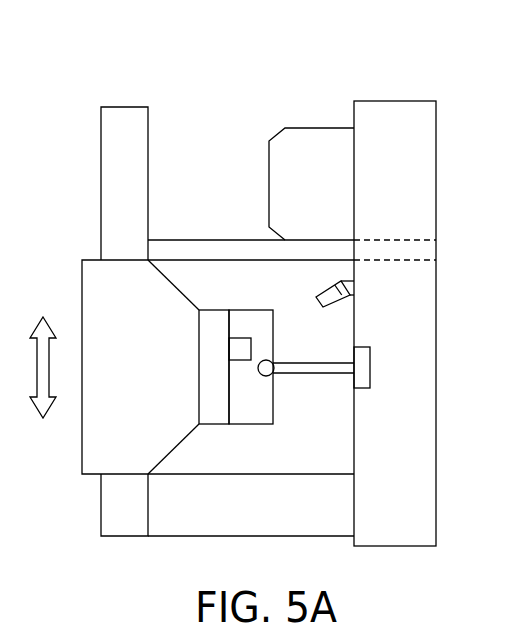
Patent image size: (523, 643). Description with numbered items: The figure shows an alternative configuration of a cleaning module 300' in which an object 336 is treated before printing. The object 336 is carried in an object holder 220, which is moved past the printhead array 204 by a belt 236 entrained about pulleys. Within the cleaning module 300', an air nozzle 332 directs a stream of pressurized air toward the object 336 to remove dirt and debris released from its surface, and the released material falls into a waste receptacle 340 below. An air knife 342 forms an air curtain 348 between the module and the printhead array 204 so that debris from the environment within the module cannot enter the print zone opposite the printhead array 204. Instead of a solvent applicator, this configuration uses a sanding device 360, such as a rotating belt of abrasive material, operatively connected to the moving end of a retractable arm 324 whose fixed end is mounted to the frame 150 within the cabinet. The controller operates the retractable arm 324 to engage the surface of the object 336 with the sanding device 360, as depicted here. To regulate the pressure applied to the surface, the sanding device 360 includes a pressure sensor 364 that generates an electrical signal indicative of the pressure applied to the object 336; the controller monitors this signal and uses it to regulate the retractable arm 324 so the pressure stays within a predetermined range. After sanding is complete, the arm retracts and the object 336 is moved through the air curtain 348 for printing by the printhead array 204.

The frame 150 is at (436, 165).
The printhead array 204 is at (260, 135).
The object holder 220 is at (82, 282).
The belt 236 is at (148, 147).
The cleaning module 300' is at (295, 562).
The retractable arm 324 is at (312, 372).
The air nozzle 332 is at (325, 292).
The object 336 is at (215, 310).
The waste receptacle 340 is at (212, 474).
The air knife 342 is at (436, 250).
The air curtain 348 is at (242, 246).
The sanding device 360 is at (250, 310).
The pressure sensor 364 is at (243, 349).